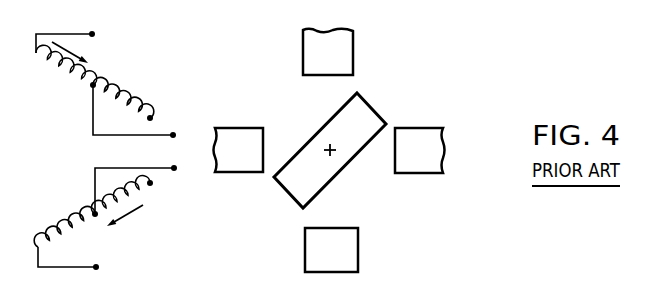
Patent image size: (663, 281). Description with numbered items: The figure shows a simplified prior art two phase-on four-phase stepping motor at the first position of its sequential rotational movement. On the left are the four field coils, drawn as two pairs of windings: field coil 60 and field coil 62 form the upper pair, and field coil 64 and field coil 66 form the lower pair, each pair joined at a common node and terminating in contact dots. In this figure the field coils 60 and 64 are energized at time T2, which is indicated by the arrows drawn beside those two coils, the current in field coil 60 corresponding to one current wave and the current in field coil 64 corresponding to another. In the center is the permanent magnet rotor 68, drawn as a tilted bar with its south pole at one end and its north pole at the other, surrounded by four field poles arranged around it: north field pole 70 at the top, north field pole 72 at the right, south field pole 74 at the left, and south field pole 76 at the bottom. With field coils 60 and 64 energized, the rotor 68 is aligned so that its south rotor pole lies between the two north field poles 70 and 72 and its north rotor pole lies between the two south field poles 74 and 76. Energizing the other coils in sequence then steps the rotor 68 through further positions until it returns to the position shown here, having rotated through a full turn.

The field coil 60 is at (67, 68).
The field coil 62 is at (128, 107).
The field coil 64 is at (129, 194).
The field coil 66 is at (73, 222).
The permanent magnet rotor 68 is at (331, 118).
The north field pole 70 is at (303, 49).
The north field pole 72 is at (420, 128).
The south field pole 74 is at (232, 128).
The south field pole 76 is at (305, 248).